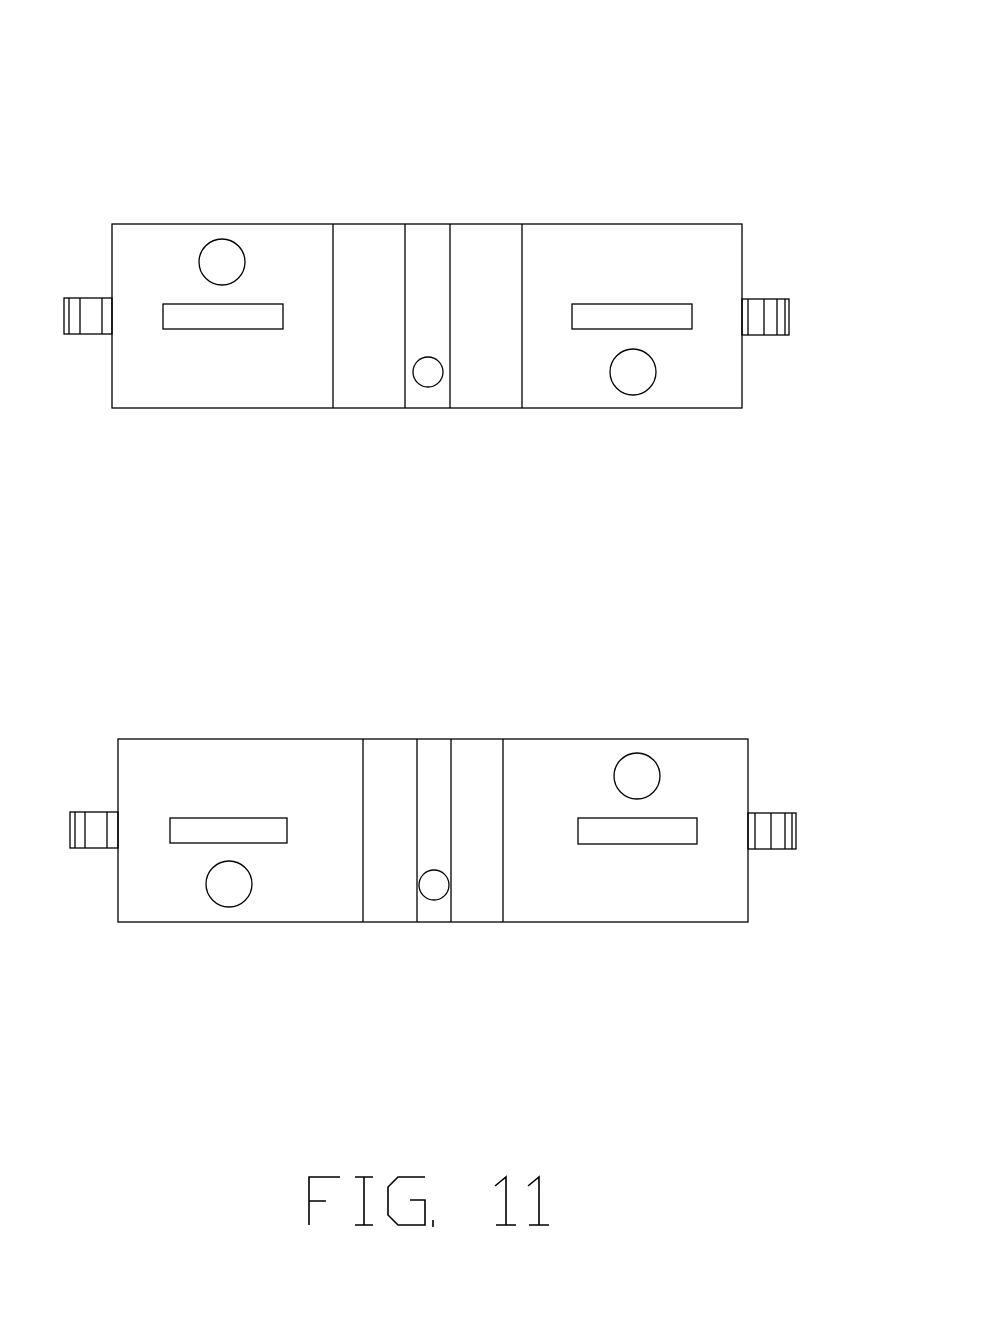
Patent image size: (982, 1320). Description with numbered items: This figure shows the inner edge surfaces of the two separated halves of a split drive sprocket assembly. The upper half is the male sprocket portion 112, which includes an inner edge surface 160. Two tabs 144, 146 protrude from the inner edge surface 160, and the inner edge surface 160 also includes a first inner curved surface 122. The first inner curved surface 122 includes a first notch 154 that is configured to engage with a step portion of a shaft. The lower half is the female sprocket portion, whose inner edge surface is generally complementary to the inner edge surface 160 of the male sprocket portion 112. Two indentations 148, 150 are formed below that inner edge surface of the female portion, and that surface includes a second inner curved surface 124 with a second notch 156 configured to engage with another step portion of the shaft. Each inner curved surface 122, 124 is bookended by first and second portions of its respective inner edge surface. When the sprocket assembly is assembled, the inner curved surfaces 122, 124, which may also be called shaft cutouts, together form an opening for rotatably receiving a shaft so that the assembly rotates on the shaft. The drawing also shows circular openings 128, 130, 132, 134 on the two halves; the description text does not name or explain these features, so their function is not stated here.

The male sprocket portion 112 is at (433, 511).
The first inner curved surface 122 is at (581, 229).
The second inner curved surface 124 is at (485, 881).
The inlet port 128 is at (285, 184).
The outlet port 130 is at (684, 430).
The port 132 is at (283, 941).
The port 134 is at (697, 720).
The tab 144 is at (253, 417).
The tab 146 is at (714, 376).
The indentation 148 is at (268, 737).
The indentation 150 is at (704, 893).
The first notch 154 is at (469, 235).
The second notch 156 is at (490, 906).
The inner edge surface 160 is at (402, 212).